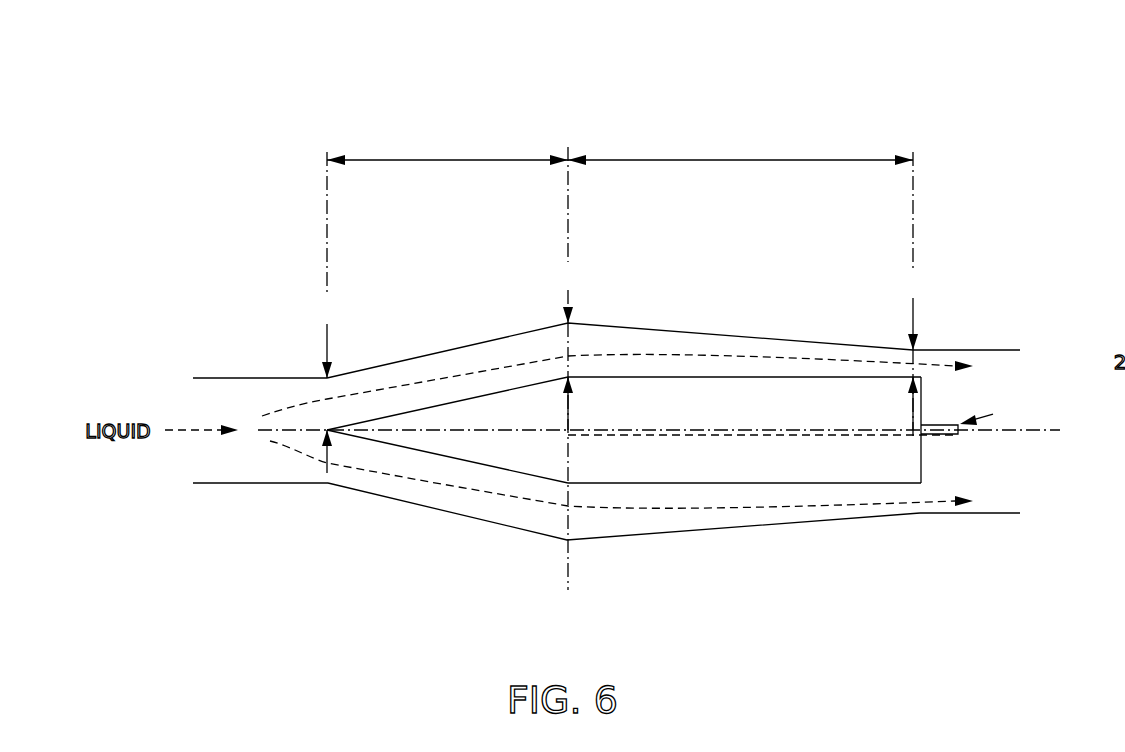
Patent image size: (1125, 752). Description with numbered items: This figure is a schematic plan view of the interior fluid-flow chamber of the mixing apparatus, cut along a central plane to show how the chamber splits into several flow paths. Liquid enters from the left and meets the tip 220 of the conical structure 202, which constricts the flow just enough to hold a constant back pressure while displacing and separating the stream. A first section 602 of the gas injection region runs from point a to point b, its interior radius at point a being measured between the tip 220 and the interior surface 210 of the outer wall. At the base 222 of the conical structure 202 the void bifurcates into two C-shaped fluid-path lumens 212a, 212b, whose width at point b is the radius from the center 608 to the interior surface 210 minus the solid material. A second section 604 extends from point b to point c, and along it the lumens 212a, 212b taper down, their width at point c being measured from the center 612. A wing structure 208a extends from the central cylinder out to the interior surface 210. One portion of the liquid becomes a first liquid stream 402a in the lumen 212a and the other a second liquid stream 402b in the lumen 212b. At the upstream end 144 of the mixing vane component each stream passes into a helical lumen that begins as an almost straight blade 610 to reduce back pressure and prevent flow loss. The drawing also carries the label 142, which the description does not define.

The first section 602 is at (453, 158).
The second section 604 is at (757, 160).
The first liquid stream 402a is at (682, 356).
The second liquid stream 402b is at (713, 512).
The first fluid-path lumen 212a is at (737, 340).
The second fluid-path lumen 212b is at (643, 523).
The interior surface 210 is at (327, 378).
The almost straight blade 610 is at (940, 425).
The tip 220 is at (327, 430).
The conical structure 202 is at (458, 442).
The central axis 142 is at (500, 432).
The center 608 is at (566, 431).
The base 222 is at (568, 432).
The wing structure 208a is at (755, 435).
The center 612 is at (923, 437).
The upstream end 144 is at (1010, 513).